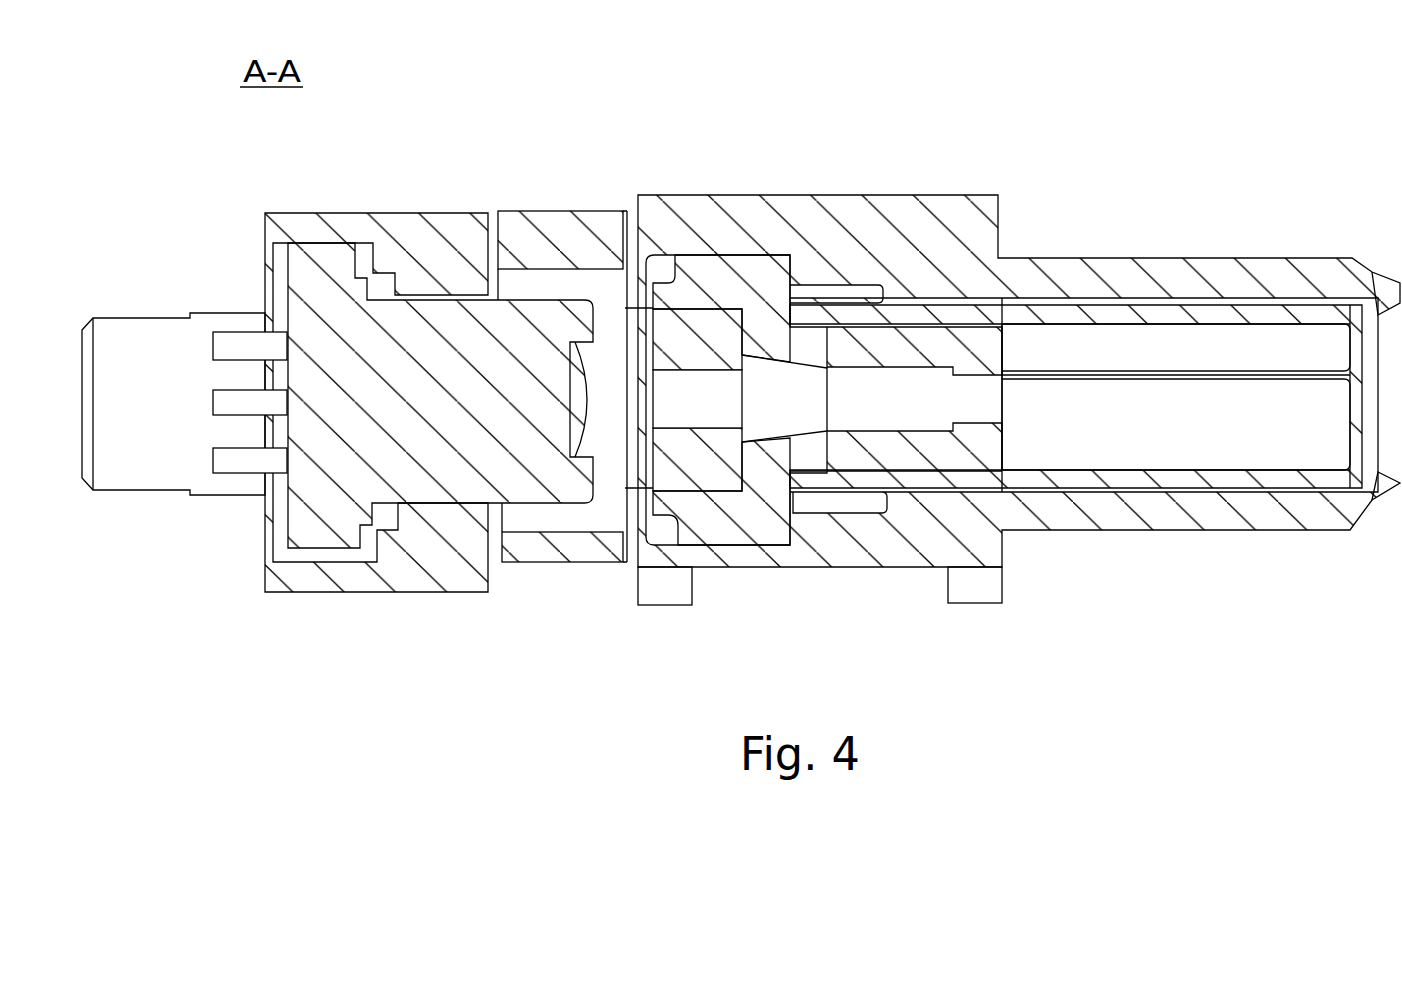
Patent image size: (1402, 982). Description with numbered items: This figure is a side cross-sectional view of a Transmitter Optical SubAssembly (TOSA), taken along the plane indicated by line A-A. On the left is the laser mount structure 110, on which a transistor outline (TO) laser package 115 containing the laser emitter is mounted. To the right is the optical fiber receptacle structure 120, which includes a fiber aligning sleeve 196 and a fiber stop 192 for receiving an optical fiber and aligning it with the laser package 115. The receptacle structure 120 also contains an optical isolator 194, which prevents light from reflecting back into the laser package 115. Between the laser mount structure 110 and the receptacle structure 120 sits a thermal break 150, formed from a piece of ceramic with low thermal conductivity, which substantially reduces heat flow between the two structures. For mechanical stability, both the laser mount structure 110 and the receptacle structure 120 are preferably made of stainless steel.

The laser mount structure 110 is at (420, 572).
The transistor outline (TO) laser package 115 is at (348, 388).
The optical fiber receptacle structure 120 is at (880, 237).
The thermal break 150 is at (535, 242).
The fiber stop 192 is at (768, 497).
The optical isolator 194 is at (685, 325).
The fiber aligning sleeve 196 is at (1190, 322).